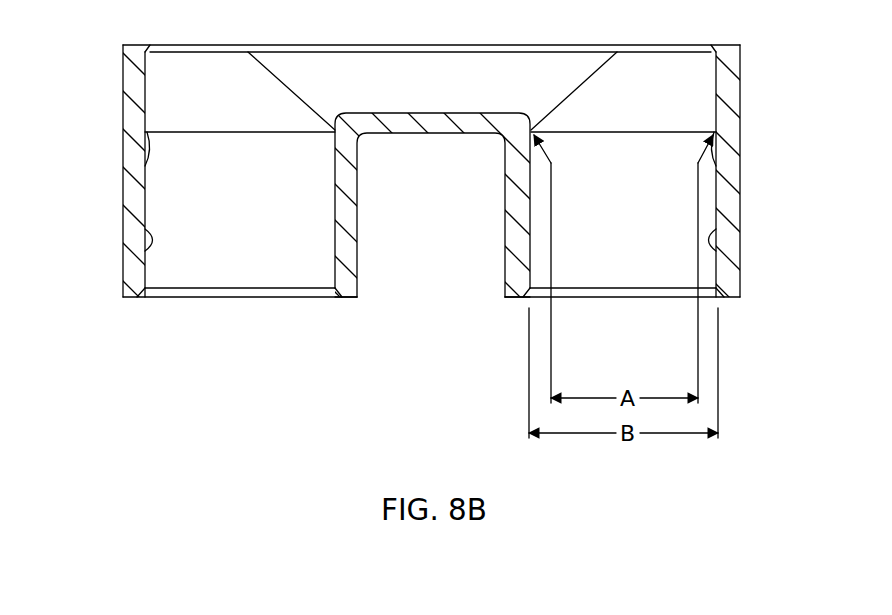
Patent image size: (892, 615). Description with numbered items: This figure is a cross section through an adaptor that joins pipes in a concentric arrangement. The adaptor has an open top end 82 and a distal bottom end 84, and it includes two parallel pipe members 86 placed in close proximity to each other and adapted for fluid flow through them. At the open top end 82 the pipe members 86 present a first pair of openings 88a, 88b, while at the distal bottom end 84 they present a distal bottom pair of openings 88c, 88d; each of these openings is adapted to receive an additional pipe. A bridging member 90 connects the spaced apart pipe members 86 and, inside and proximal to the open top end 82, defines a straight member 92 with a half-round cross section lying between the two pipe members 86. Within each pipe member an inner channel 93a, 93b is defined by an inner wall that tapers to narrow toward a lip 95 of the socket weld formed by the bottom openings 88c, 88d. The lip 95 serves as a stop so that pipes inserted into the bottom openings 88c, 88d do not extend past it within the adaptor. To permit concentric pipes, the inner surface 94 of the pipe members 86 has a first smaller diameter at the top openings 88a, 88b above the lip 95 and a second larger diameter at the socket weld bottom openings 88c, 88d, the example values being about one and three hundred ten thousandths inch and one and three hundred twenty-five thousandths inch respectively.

The open top end 82 is at (183, 45).
The distal bottom end 84 is at (514, 297).
The pipe members 86 is at (123, 226).
The top opening 88a is at (226, 75).
The top opening 88b is at (659, 75).
The distal bottom opening 88c is at (263, 297).
The distal bottom opening 88d is at (652, 297).
The bridging member 90 is at (447, 135).
The straight member 92 is at (447, 90).
The inner channel 93a is at (260, 226).
The inner channel 93b is at (645, 223).
The inner surface 94 is at (151, 242).
The lip 95 is at (145, 165).